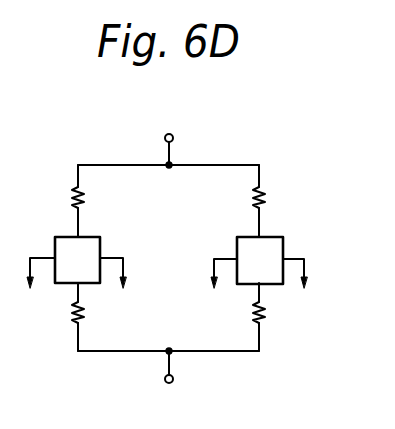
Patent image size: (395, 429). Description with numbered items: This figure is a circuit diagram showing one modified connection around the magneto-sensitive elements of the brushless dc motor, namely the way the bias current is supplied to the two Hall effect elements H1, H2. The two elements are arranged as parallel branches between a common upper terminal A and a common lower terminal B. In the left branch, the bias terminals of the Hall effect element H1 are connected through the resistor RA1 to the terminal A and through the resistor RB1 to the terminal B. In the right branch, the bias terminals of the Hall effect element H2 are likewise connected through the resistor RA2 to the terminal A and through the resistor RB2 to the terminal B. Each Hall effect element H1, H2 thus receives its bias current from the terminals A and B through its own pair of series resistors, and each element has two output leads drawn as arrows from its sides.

The resistor RA1 is at (82, 204).
The resistor RA2 is at (263, 204).
The resistor RB1 is at (83, 320).
The resistor RB2 is at (263, 321).
The Hall effect element H1 is at (100, 237).
The Hall effect element H2 is at (283, 243).
The terminal A is at (178, 140).
The terminal B is at (178, 376).